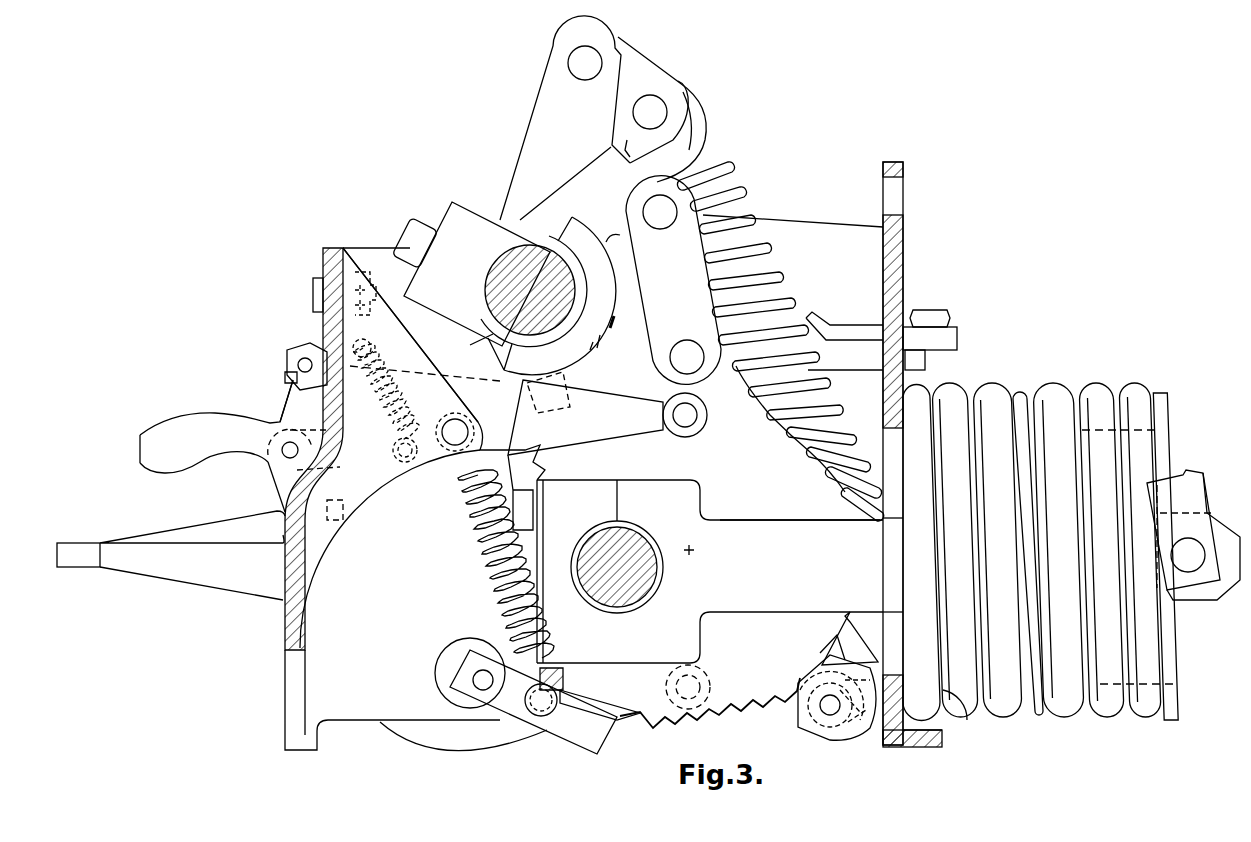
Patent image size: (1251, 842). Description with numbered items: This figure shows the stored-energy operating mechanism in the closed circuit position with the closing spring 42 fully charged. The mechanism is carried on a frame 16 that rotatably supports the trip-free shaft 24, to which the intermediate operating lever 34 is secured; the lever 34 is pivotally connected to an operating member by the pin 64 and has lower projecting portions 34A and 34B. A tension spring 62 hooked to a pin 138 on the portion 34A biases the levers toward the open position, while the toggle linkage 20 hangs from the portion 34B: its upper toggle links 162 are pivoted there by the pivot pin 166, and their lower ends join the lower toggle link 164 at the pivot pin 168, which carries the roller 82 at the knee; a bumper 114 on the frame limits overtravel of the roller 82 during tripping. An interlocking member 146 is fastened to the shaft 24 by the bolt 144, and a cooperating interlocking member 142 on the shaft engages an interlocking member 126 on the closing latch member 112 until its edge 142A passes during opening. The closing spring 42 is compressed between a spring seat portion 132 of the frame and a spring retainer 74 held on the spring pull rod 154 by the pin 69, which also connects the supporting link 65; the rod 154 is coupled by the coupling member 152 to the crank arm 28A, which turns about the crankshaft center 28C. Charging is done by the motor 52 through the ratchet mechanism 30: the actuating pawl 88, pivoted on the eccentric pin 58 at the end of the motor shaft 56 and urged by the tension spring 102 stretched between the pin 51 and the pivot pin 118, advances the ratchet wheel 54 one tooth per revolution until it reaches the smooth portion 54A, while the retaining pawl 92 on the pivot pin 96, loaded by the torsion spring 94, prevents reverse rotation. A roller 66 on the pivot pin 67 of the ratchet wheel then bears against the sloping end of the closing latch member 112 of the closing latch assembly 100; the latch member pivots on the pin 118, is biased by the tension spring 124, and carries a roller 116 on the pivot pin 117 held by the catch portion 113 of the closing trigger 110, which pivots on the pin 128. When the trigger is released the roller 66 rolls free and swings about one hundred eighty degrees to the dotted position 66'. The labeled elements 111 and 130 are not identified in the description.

The frame 16 is at (323, 262).
The toggle linkage 20 is at (562, 291).
The trip-free shaft 24 is at (500, 260).
The crank arm 28A is at (622, 530).
The center of the crankshaft 28C is at (696, 550).
The ratchet mechanism 30 is at (591, 484).
The operating lever 34 is at (565, 118).
The lower projecting portion 34A is at (650, 72).
The lower projecting portion 34B is at (620, 150).
The closing spring 42 is at (988, 385).
The pin 51 is at (530, 715).
The motor 52 is at (400, 735).
The ratchet wheel 54 is at (700, 732).
The smooth portion 54A is at (586, 698).
The motor shaft 56 is at (460, 645).
The pivot pin 58 is at (470, 680).
The tension spring 62 is at (735, 190).
The pin 64 is at (598, 83).
The supporting link 65 is at (1195, 480).
The roller 66 is at (706, 415).
The pivot pin 67 is at (693, 425).
The roller position 66' is at (703, 676).
The pin 69 is at (1175, 545).
The spring retainer 74 is at (1168, 424).
The roller 82 is at (655, 398).
The actuating pawl 88 is at (570, 742).
The retaining pawl 92 is at (848, 618).
The torsion spring 94 is at (837, 697).
The pivot pin 96 is at (818, 712).
The closing latch assembly 100 is at (218, 393).
The tension spring 102 is at (468, 545).
The closing trigger 110 is at (140, 438).
The lever tip 111 is at (278, 420).
The closing latch member 112 is at (472, 372).
The catch portion 113 is at (284, 378).
The bumper 114 is at (810, 316).
The roller 116 is at (290, 368).
The pivot pin 117 is at (305, 355).
The pivot pin 118 is at (450, 428).
The tension spring 124 is at (400, 405).
The interlocking member 126 is at (545, 372).
The pivot pin 128 is at (280, 460).
The hidden stop 130 is at (332, 472).
The spring seat portion 132 is at (895, 742).
The pin 138 is at (666, 100).
The interlocking member 142 is at (585, 205).
The edge of the working surface 142A is at (600, 355).
The bolt 144 is at (412, 225).
The interlocking member 146 is at (460, 204).
The coupling member 152 is at (580, 480).
The spring pull rod 154 is at (770, 520).
The upper toggle links 162 is at (620, 236).
The lower toggle link 164 is at (610, 349).
The pivot pin 166 is at (676, 225).
The pivot pin 168 is at (694, 341).